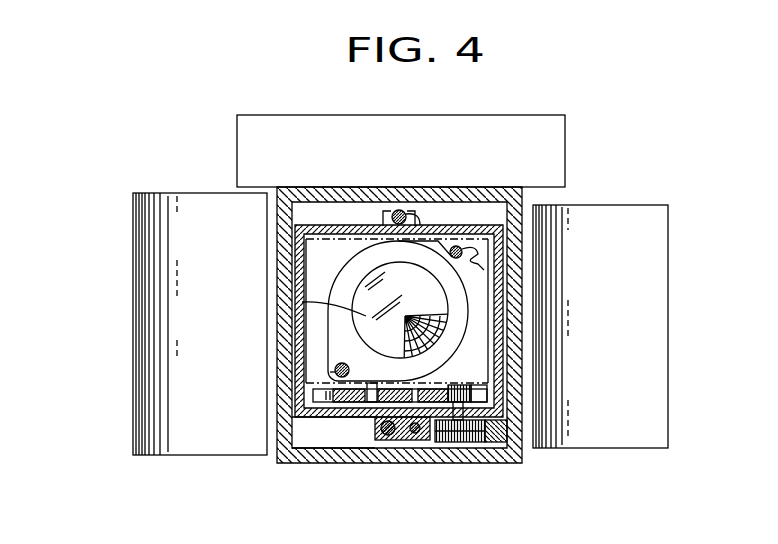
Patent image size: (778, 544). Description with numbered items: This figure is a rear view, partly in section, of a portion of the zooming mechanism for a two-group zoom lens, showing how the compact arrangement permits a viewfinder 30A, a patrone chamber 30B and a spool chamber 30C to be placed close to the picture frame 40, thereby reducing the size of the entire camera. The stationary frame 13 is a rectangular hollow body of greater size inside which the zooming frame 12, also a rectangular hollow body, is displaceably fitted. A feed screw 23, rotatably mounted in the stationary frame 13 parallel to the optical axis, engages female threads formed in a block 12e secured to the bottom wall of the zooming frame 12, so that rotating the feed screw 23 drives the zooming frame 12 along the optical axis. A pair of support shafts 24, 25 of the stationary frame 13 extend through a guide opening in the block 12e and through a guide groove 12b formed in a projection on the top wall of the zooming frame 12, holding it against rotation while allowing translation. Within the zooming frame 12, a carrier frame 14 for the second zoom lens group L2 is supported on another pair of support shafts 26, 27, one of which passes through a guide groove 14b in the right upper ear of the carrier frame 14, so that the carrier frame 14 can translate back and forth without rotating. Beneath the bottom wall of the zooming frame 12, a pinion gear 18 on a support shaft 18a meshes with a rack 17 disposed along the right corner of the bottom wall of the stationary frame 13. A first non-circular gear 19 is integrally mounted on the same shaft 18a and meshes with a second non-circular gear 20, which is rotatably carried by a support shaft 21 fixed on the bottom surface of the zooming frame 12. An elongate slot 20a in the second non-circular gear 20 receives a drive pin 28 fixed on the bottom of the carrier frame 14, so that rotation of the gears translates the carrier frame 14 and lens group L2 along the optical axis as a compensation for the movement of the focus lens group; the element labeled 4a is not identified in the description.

The viewfinder 30A is at (256, 126).
The patrone chamber 30B is at (197, 205).
The spool chamber 30C is at (612, 227).
The zooming frame 12 is at (463, 230).
The guide groove 12b is at (414, 218).
The block 12e is at (401, 452).
The stationary frame 13 is at (317, 196).
The carrier frame 14 is at (347, 276).
The guide groove 14b is at (457, 266).
The rack 17 is at (497, 437).
The pinion gear 18 is at (463, 445).
The support shaft 18a is at (451, 443).
The first non-circular gear 19 is at (436, 392).
The second non-circular gear 20 is at (352, 404).
The elongate slot 20a is at (371, 405).
The support shaft 21 is at (302, 414).
The feed screw 23 is at (387, 436).
The support shaft 24 is at (415, 434).
The support shaft 25 is at (398, 211).
The support shaft 26 is at (342, 362).
The support shaft 27 is at (468, 266).
The drive pin 28 is at (371, 383).
The picture frame 40 is at (302, 246).
The adjusting portion 4a is at (334, 372).
The zoom lens group L2 is at (302, 302).